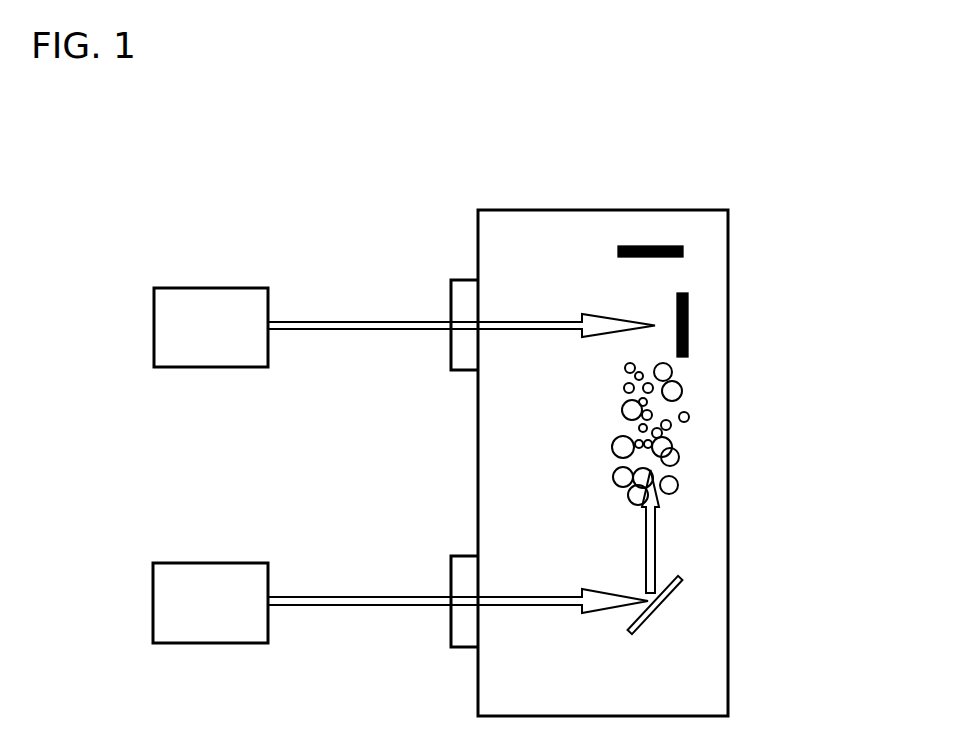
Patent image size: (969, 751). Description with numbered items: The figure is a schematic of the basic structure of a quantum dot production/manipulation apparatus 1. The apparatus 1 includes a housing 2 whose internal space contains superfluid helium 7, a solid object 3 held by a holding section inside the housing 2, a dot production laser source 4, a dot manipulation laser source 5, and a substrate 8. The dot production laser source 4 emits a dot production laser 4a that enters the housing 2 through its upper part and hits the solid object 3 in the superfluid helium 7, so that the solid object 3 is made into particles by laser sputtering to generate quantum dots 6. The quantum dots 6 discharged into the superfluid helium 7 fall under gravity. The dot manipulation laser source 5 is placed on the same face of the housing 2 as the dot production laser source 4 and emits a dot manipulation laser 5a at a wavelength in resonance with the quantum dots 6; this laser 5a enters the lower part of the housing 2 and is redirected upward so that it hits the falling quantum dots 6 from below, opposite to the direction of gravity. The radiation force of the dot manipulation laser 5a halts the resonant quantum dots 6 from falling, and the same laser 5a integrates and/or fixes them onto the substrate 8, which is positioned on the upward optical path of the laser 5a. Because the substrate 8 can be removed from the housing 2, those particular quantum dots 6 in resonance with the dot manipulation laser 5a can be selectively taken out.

The quantum dot production/manipulation apparatus 1 is at (822, 265).
The housing 2 is at (728, 628).
The solid object 3 is at (688, 318).
The dot production laser source 4 is at (215, 300).
The dot production laser 4a is at (388, 321).
The dot manipulation laser source 5 is at (215, 577).
The dot manipulation laser 5a is at (387, 596).
The quantum dots 6 is at (680, 455).
The superfluid helium 7 is at (563, 222).
The substrate 8 is at (650, 245).